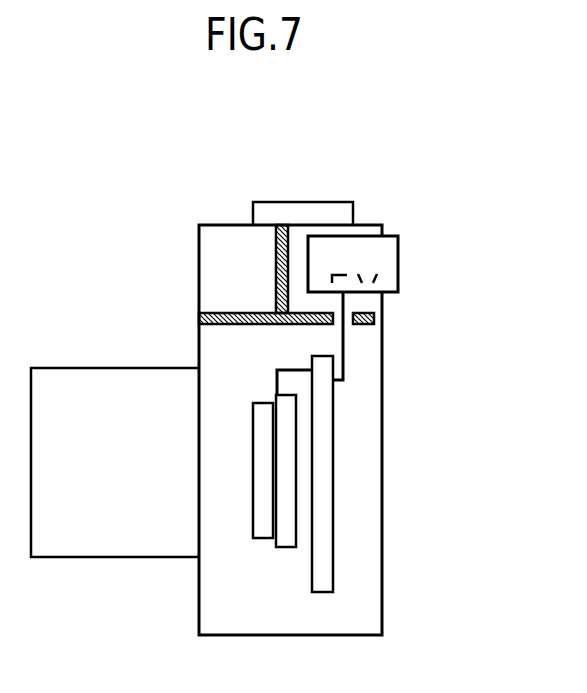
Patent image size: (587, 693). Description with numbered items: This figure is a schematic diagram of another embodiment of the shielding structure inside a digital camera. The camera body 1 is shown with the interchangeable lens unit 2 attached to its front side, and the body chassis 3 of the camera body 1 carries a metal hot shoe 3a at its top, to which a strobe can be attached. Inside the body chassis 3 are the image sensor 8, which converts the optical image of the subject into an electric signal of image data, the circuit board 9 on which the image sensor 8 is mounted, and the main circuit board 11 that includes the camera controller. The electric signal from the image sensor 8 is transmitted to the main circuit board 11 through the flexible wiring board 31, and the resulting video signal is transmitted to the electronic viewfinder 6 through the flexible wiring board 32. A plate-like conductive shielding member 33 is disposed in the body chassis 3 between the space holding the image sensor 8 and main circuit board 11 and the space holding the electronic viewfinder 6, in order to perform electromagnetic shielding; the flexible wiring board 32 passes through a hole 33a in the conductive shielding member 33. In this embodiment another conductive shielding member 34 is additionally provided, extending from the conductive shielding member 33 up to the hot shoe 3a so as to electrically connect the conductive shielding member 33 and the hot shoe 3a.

The camera body 1 is at (228, 190).
The interchangeable lens unit 2 is at (92, 368).
The body chassis 3 is at (197, 247).
The hot shoe 3a is at (288, 213).
The electronic viewfinder 6 is at (372, 223).
The image sensor 8 is at (263, 523).
The circuit board 9 is at (284, 511).
The main circuit board 11 is at (332, 455).
The flexible wiring board 31 is at (277, 370).
The flexible wiring board 32 is at (345, 370).
The conductive shielding member 33 is at (235, 313).
The hole 33a is at (368, 312).
The another conductive shielding member 34 is at (275, 255).